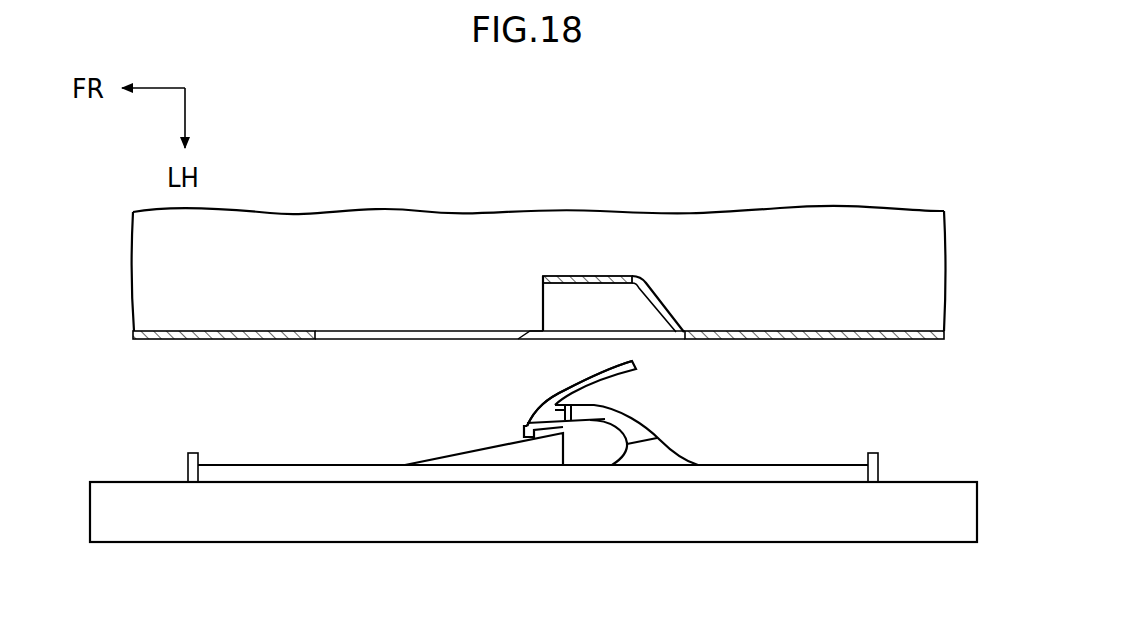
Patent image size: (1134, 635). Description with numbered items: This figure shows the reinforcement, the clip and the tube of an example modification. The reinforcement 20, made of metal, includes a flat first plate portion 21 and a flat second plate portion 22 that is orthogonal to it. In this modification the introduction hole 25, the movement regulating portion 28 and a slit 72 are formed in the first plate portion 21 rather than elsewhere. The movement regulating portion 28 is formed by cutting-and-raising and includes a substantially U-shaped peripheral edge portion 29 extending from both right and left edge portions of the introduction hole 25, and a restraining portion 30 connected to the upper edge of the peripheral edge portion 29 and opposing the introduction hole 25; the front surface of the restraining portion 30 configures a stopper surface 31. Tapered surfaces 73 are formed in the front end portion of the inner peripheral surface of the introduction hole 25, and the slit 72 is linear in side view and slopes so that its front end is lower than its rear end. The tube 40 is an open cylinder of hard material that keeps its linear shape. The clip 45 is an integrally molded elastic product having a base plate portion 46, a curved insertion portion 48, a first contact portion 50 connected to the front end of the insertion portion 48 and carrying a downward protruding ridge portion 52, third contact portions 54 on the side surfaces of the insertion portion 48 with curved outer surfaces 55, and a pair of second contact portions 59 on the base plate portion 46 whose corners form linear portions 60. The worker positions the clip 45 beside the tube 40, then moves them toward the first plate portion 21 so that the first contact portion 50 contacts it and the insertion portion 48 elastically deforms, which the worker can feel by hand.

The reinforcement 20 is at (341, 230).
The first plate portion 21 is at (235, 340).
The second plate portion 22 is at (797, 228).
The introduction hole 25 is at (672, 340).
The movement regulating portion 28 is at (663, 302).
The peripheral edge portion 29 is at (617, 297).
The restraining portion 30 is at (577, 278).
The stopper surface 31 is at (532, 278).
The tube 40 is at (257, 522).
The clip 45 is at (524, 390).
The base plate portion 46 is at (832, 463).
The insertion portion 48 is at (653, 452).
The first contact portion 50 is at (598, 373).
The protruding ridge portion 52 is at (521, 430).
The third contact portion 54 is at (640, 433).
The outer surface 55 is at (635, 417).
The second contact portion 59 is at (457, 458).
The linear portion 60 is at (566, 433).
The slit 72 is at (314, 339).
The tapered surface 73 is at (527, 330).